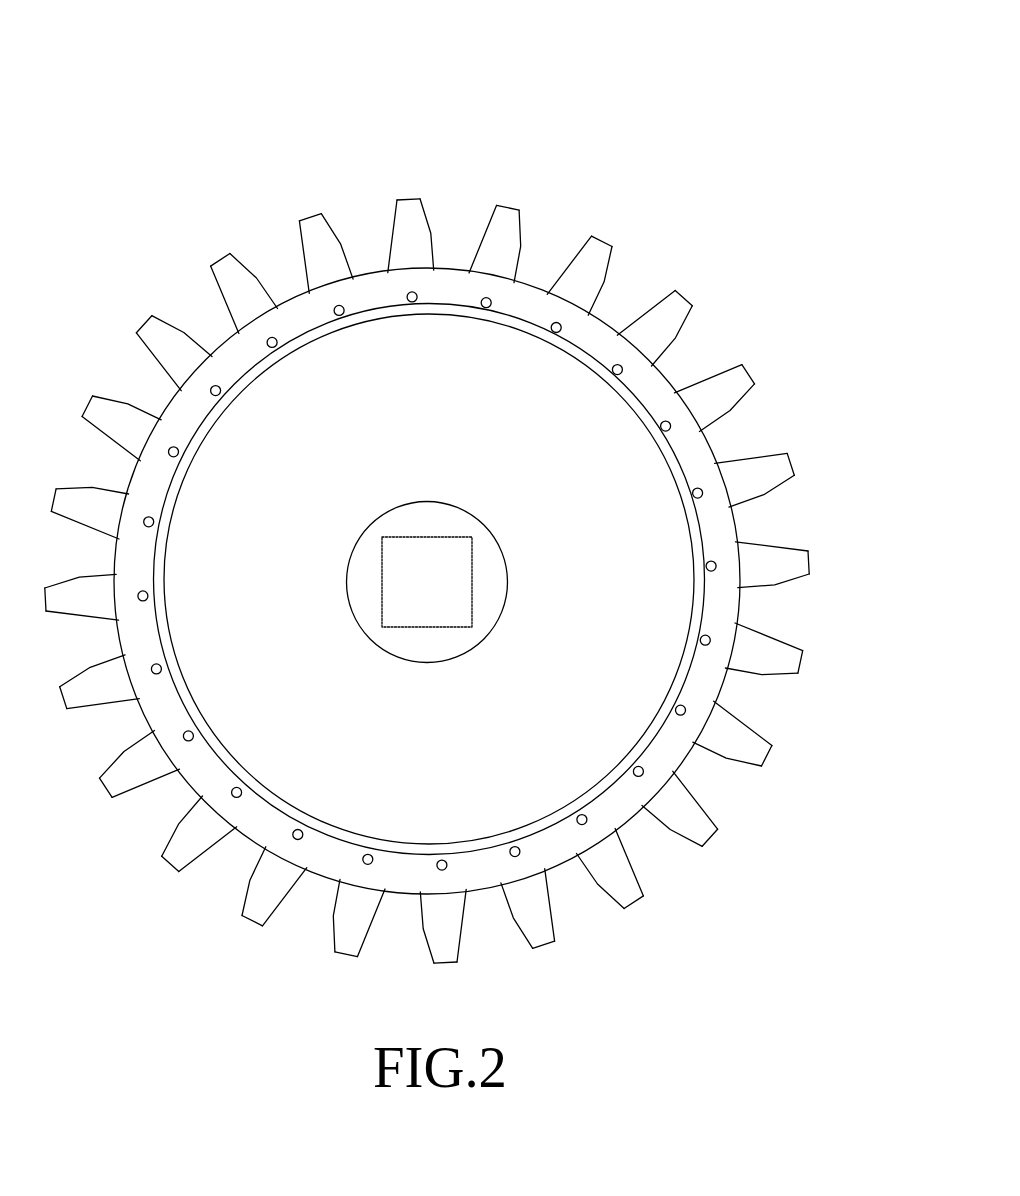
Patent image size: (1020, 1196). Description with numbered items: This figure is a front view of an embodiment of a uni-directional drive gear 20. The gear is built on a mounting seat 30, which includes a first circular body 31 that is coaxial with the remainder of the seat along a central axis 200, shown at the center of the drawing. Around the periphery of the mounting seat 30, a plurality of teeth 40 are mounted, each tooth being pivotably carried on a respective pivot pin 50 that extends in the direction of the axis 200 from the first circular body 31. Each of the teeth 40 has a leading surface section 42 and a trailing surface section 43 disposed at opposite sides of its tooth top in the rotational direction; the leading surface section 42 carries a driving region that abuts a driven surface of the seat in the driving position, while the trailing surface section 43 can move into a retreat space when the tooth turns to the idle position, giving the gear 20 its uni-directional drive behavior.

The uni-directional drive gear 20 is at (427, 483).
The mounting seat 30 is at (364, 256).
The first circular body 31 is at (297, 317).
The teeth 40 is at (427, 518).
The leading surface section 42 is at (488, 230).
The trailing surface section 43 is at (520, 256).
The pivot pins 50 is at (486, 303).
The axis 200 is at (427, 582).